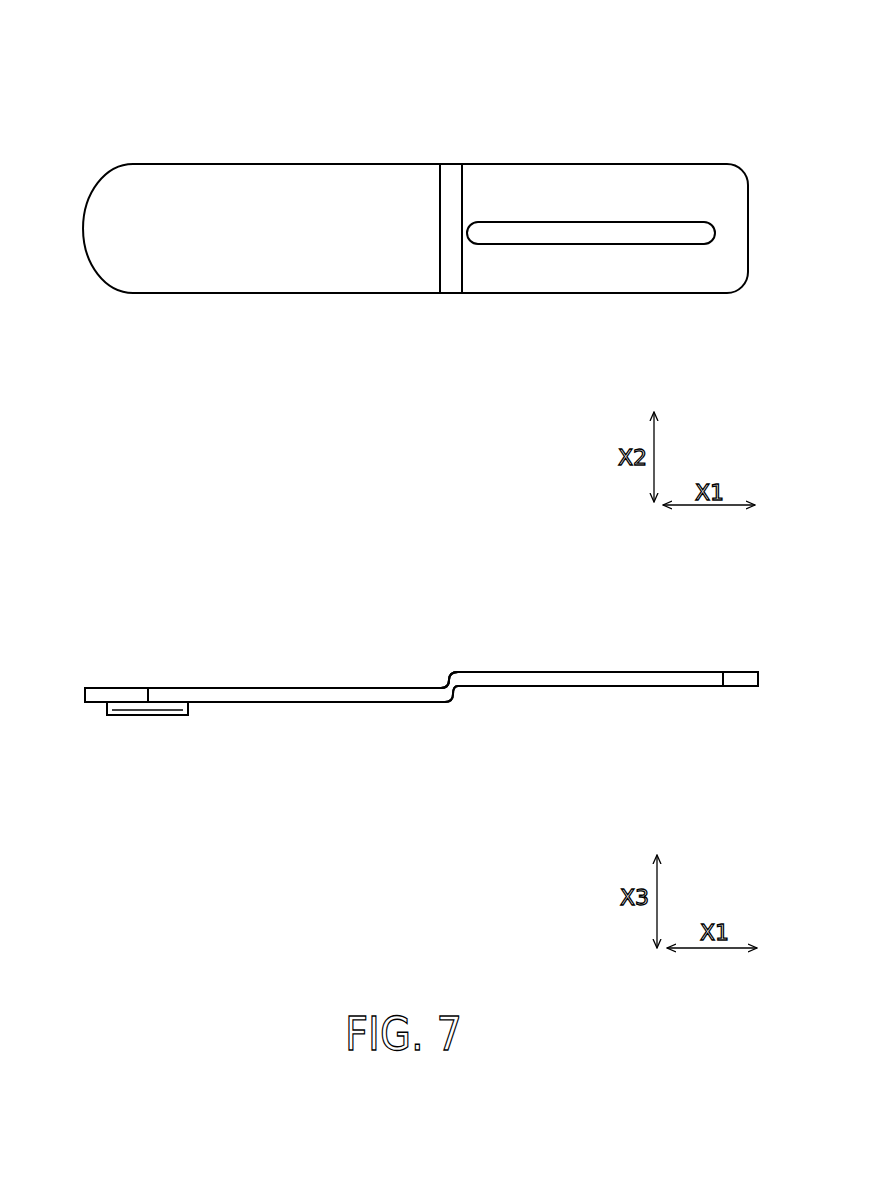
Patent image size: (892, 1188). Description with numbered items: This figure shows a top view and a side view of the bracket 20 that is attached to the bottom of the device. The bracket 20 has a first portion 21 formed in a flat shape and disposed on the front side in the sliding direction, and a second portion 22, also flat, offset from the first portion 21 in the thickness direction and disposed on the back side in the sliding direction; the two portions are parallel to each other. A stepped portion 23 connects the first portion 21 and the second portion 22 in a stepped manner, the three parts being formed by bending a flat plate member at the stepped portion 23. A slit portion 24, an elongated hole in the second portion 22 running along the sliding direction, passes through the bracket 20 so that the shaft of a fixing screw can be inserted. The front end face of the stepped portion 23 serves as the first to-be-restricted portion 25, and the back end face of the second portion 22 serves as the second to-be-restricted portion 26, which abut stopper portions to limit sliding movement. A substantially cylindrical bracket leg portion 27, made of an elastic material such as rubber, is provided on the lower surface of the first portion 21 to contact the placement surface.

The bracket 20 is at (145, 124).
The first portion 21 is at (285, 240).
The second portion 22 is at (564, 265).
The stepped portion 23 is at (455, 240).
The slit portion 24 is at (598, 232).
The first to-be-restricted portion 25 is at (430, 164).
The second to-be-restricted portion 26 is at (748, 258).
The bracket leg portion 27 is at (155, 706).